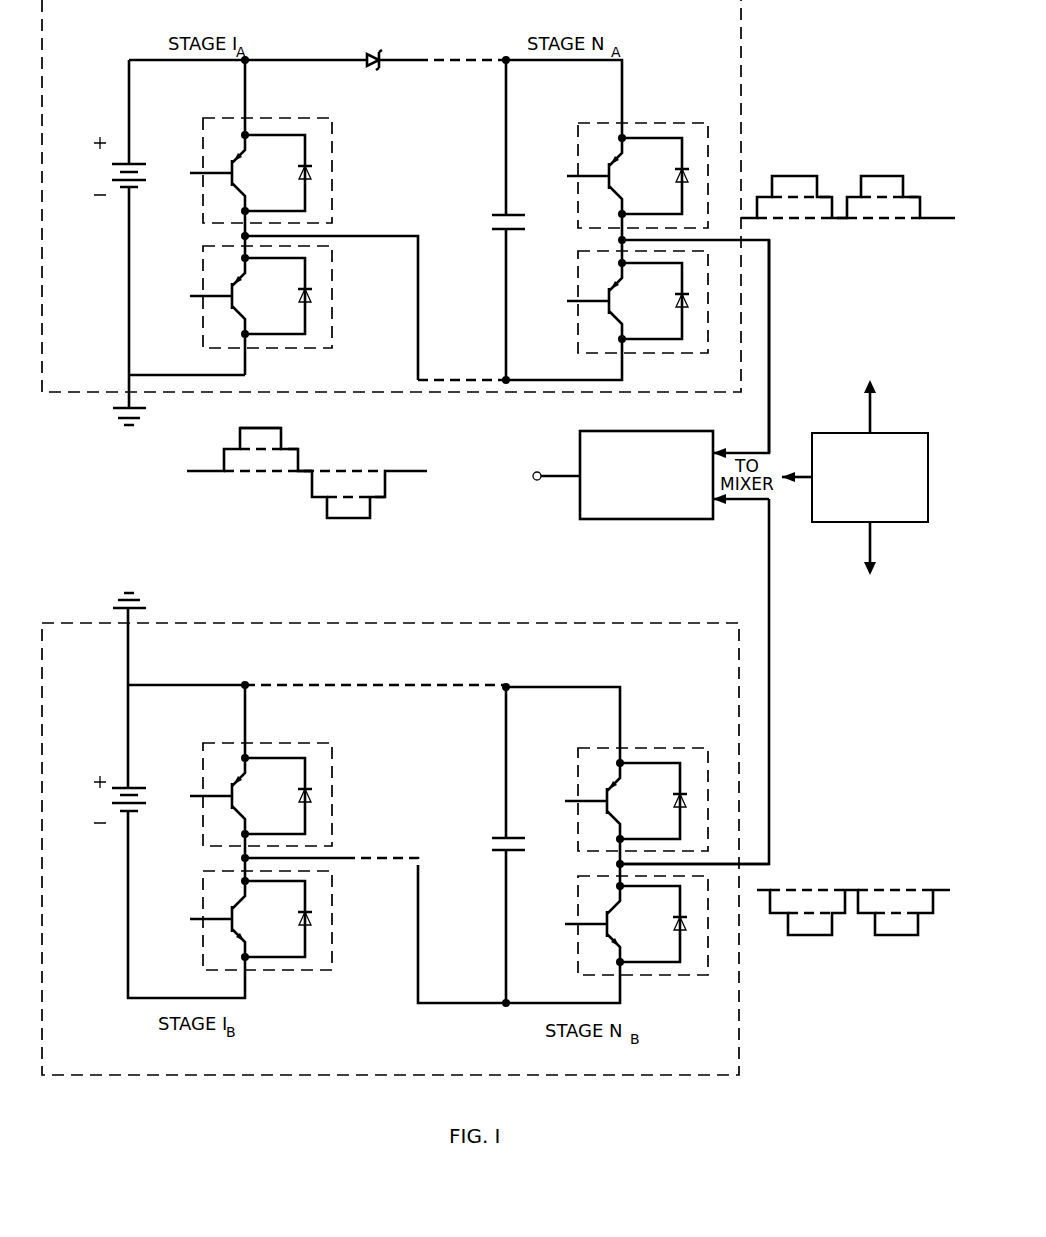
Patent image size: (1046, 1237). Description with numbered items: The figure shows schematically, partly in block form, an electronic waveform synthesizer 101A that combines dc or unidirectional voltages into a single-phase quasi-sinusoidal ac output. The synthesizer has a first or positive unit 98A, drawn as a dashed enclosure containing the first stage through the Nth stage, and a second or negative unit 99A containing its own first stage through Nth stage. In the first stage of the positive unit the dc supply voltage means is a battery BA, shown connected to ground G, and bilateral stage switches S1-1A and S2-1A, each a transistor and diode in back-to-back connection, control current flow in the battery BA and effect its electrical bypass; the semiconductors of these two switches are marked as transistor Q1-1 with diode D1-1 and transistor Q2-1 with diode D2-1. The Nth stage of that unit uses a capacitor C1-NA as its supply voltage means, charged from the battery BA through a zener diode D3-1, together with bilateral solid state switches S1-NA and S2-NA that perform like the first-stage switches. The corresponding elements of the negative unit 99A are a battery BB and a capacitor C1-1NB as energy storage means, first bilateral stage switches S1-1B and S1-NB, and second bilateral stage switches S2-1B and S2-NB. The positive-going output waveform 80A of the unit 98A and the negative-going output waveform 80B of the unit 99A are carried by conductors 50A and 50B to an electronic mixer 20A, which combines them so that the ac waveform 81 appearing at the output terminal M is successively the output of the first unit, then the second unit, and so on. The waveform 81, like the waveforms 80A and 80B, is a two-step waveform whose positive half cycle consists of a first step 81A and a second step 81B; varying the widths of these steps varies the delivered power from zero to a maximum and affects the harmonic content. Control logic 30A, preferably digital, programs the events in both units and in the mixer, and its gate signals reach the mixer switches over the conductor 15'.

The first or positive unit 98A is at (741, 43).
The second or negative unit 99A is at (273, 623).
The positive-going waveform 80A is at (797, 176).
The negative-going waveform 80B is at (814, 937).
The ac waveform 81 is at (262, 432).
The first step 81A is at (285, 470).
The second step 81B is at (283, 447).
The conductor 50A is at (778, 326).
The conductor 50B is at (770, 717).
The electronic mixer 20A is at (668, 521).
The control logic 30A is at (822, 523).
The conductor 15' is at (795, 441).
The electronic waveform synthesizer 101A is at (200, 1102).
The battery BA is at (127, 153).
The battery BB is at (131, 787).
The ground G is at (113, 409).
The output terminal M is at (532, 480).
The transistor Q1-1 is at (230, 178).
The transistor Q2-1 is at (230, 305).
The diode D1-1 is at (318, 176).
The diode D2-1 is at (320, 296).
The zener diode D3-1 is at (370, 50).
The bilateral stage switch S1-1A is at (272, 170).
The bilateral stage switch S2-1A is at (274, 297).
The bilateral solid state switch S1-NA is at (645, 122).
The bilateral solid state switch S2-NA is at (575, 311).
The first bilateral stage switch S1-1B is at (333, 814).
The second bilateral stage switch S2-1B is at (333, 956).
The first bilateral stage switch S1-NB is at (576, 786).
The second bilateral stage switch S2-NB is at (576, 933).
The capacitor C1-NA is at (492, 214).
The capacitor C1-1NB is at (492, 838).